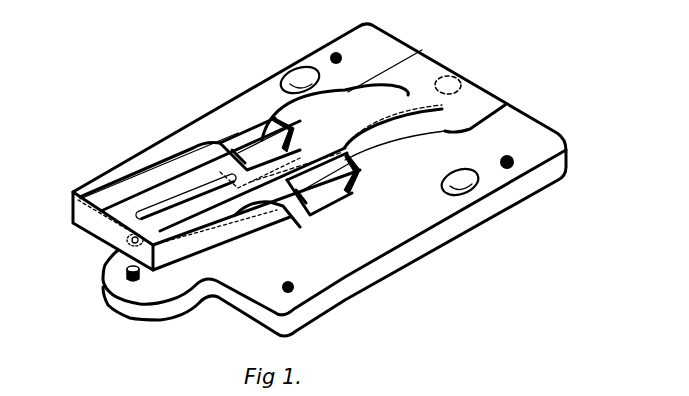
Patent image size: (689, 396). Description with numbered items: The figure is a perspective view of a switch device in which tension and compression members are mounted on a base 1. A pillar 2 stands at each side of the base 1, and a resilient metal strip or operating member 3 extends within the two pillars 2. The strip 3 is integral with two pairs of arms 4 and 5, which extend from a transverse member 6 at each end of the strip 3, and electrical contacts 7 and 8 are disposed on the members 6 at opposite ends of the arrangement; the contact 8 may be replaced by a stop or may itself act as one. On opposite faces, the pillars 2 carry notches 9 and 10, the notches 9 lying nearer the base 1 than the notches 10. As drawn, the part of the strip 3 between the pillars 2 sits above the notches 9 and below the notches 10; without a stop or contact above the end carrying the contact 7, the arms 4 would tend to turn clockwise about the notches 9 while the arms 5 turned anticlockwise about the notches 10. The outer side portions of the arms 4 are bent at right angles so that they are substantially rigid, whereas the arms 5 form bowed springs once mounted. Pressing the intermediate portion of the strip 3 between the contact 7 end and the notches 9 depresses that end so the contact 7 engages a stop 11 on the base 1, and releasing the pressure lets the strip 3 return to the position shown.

The base 1 is at (407, 233).
The pillar 2 is at (248, 130).
The resilient metal strip 3 is at (372, 120).
The arms 4 is at (100, 203).
The arms 5 is at (322, 88).
The transverse member 6 is at (487, 95).
The electrical contact 7 is at (102, 262).
The electrical contact 8 is at (458, 72).
The notches 9 is at (180, 130).
The notches 10 is at (285, 120).
The stop 11 is at (137, 282).